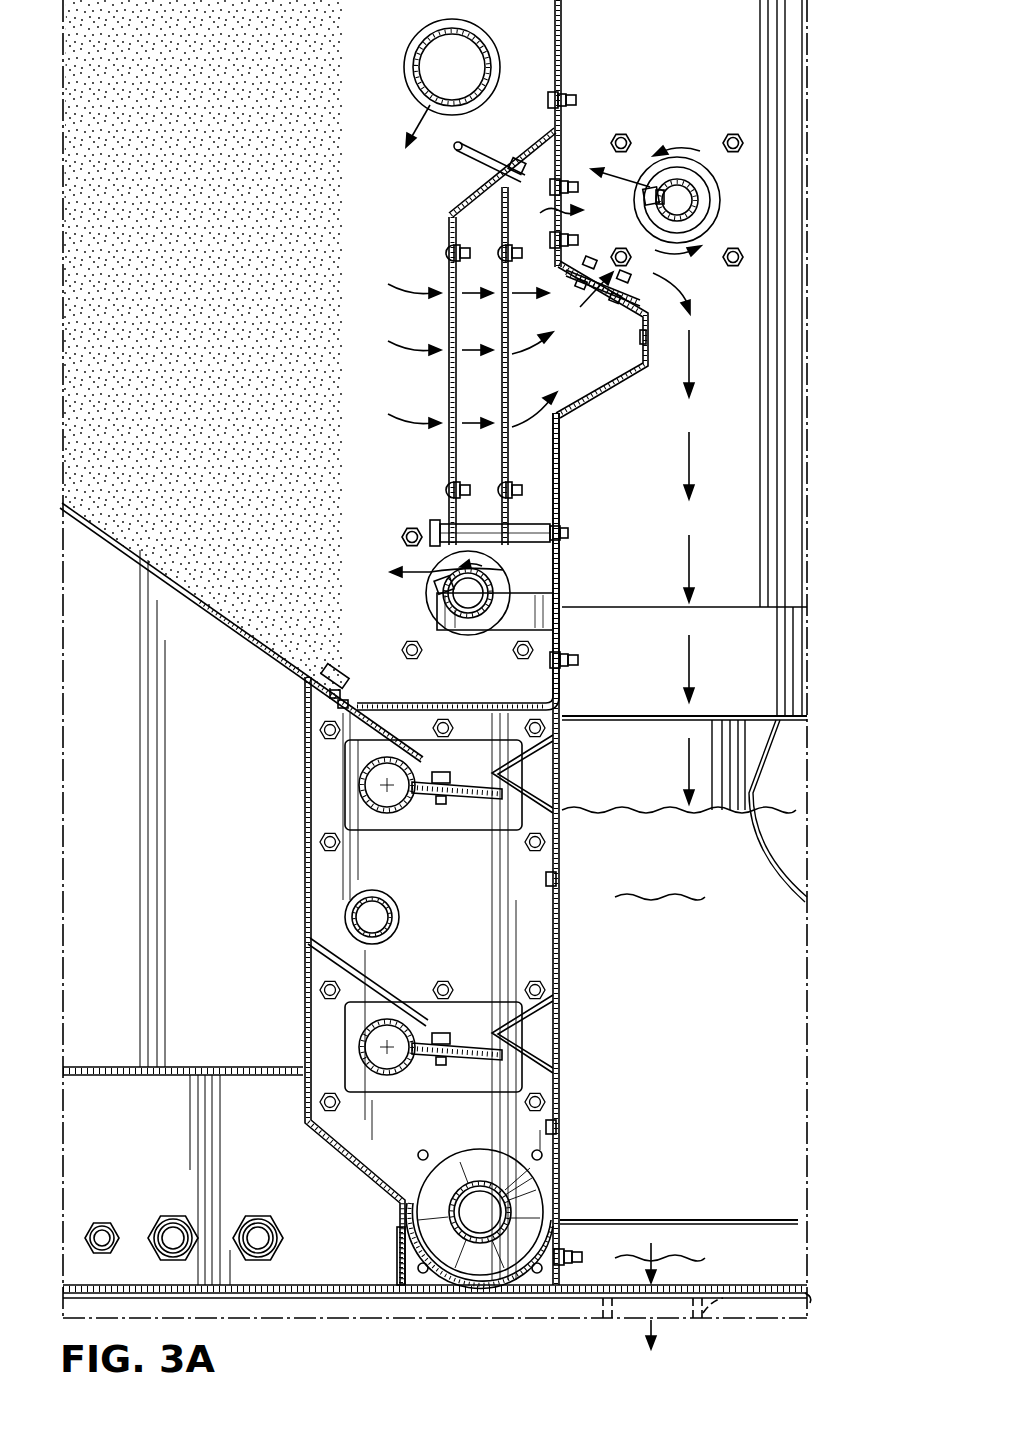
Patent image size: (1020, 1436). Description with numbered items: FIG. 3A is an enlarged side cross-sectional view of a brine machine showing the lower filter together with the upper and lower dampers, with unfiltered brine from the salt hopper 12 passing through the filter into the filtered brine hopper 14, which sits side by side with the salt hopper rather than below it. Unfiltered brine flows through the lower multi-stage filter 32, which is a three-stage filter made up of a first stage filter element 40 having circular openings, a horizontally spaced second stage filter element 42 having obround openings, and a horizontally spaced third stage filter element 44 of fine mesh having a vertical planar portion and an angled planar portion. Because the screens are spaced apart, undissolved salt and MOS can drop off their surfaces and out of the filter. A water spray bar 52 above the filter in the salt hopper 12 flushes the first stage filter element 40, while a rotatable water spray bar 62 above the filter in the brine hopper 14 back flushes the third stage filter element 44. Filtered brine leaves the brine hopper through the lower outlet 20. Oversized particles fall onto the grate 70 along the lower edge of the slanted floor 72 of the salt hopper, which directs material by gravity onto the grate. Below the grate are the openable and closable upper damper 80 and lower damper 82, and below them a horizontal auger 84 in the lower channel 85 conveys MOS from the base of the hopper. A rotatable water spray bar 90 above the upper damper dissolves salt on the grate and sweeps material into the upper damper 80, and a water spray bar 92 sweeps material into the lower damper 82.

The salt hopper 12 is at (82, 108).
The filtered brine hopper 14 is at (795, 106).
The lower outlet 20 is at (730, 1290).
The lower multi-stage filter 32 is at (406, 220).
The first stage filter element 40 is at (449, 318).
The second stage filter element 42 is at (504, 445).
The third stage filter element 44 is at (564, 204).
The water spray bar 52 is at (424, 44).
The rotatable water spray bar 62 is at (677, 180).
The grate 70 is at (483, 700).
The slanted floor 72 is at (170, 578).
The upper damper 80 is at (462, 800).
The lower damper 82 is at (483, 1058).
The horizontal auger 84 is at (435, 1208).
The lower channel 85 is at (398, 1245).
The rotatable water spray bar 90 is at (490, 583).
The water spray bar 92 is at (350, 900).